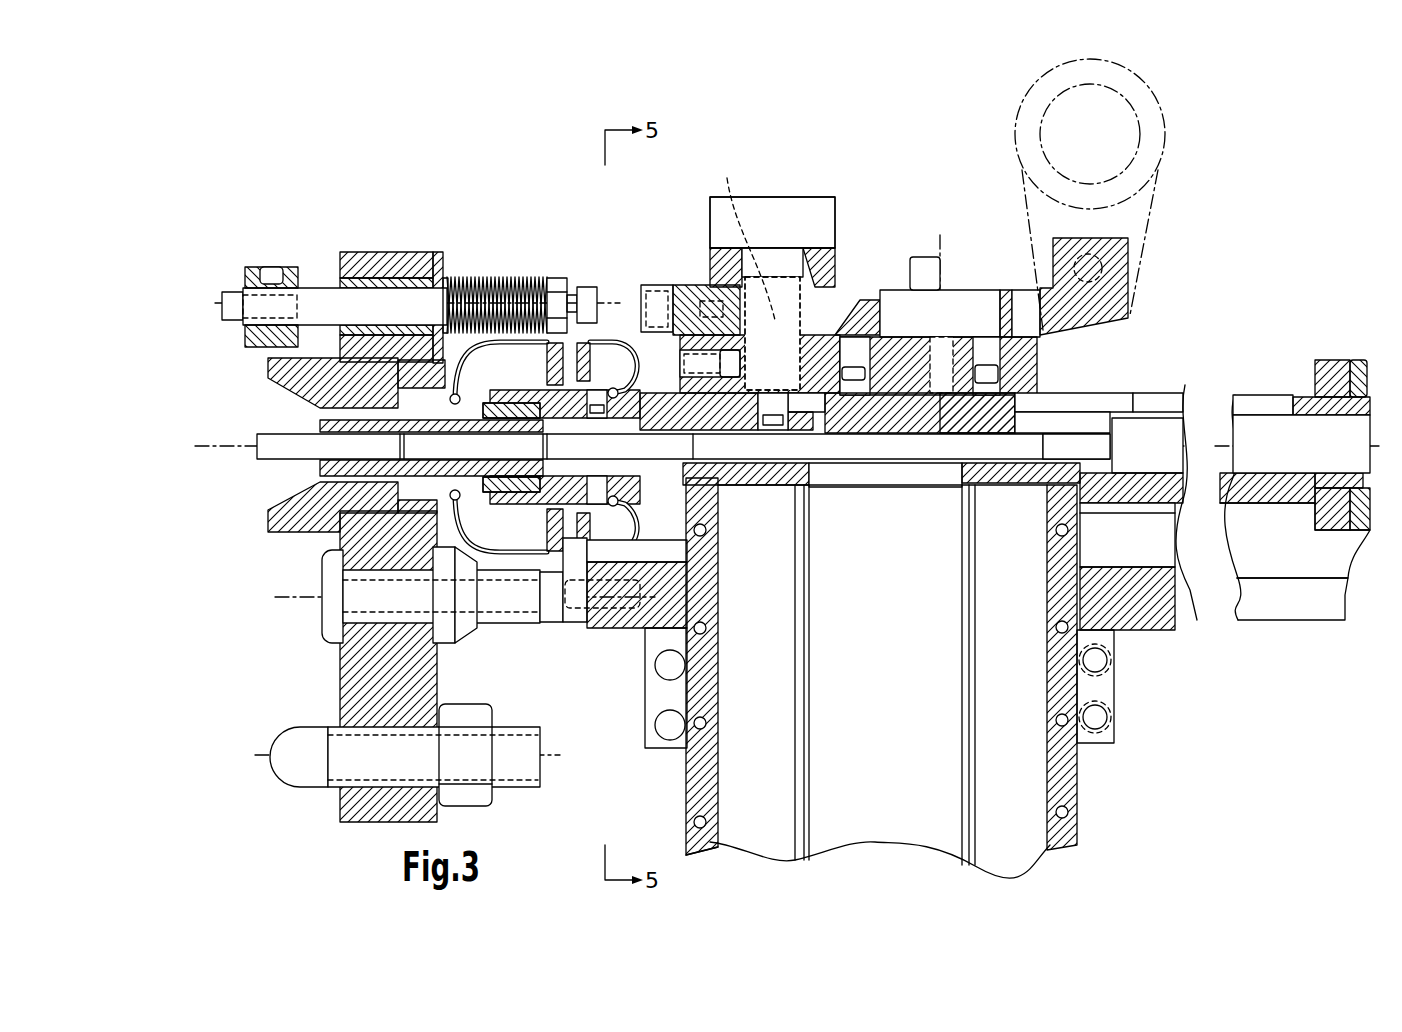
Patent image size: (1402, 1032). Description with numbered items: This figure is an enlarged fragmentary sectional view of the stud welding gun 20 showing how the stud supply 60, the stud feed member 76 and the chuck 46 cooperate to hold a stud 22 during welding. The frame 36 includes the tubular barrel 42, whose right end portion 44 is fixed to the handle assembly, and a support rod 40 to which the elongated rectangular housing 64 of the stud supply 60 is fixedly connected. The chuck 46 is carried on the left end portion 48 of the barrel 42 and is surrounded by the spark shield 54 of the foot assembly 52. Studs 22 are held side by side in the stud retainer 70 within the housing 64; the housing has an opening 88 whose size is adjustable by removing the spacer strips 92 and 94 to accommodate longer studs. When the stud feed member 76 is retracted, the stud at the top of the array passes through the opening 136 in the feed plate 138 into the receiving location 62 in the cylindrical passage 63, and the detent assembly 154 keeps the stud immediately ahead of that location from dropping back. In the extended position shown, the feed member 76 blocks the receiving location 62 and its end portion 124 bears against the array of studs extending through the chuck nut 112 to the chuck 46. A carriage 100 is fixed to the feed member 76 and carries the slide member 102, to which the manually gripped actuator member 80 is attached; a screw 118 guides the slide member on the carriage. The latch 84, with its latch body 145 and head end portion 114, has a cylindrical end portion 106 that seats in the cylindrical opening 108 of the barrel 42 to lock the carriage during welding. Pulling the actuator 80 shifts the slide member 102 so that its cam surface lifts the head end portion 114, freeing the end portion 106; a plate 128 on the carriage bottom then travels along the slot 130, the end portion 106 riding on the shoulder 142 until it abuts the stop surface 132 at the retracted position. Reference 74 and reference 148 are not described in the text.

The stud welding gun 20 is at (1283, 158).
The studs 22 is at (262, 455).
The frame 36 is at (1226, 378).
The support rod 40 is at (1268, 600).
The barrel 42 is at (1217, 387).
The right end portion of barrel 44 is at (1325, 388).
The chuck 46 is at (353, 425).
The left end portion of barrel 48 is at (520, 335).
The foot assembly 52 is at (375, 818).
The spark shield 54 is at (282, 370).
The stud supply 60 is at (686, 773).
The receiving location 62 is at (837, 465).
The cylindrical passage 63 is at (745, 417).
The housing 64 is at (703, 837).
The stud retainer 70 is at (882, 795).
The drum body 74 is at (1272, 460).
The stud feed member 76 is at (1035, 437).
The actuator member 80 is at (1168, 147).
The latch 84 is at (797, 198).
The opening 88 is at (975, 823).
The spacer strip 92 is at (748, 802).
The spacer strip 94 is at (1028, 785).
The carriage 100 is at (303, 461).
The slide member 102 is at (1005, 287).
The cylindrical end portion of latch 106 is at (737, 295).
The cylindrical opening 108 is at (771, 410).
The chuck nut 112 is at (420, 360).
The head end portion of latch 114 is at (812, 200).
The screw 118 is at (948, 255).
The end portion of stud feed member 124 is at (797, 505).
The plate 128 is at (1035, 432).
The slot 130 is at (1165, 405).
The stop surface 132 is at (1178, 395).
The opening 136 is at (953, 513).
The feed plate 138 is at (1035, 487).
The shoulder 142 is at (1147, 445).
The latch body 145 is at (810, 350).
The hole 148 is at (742, 234).
The detent assembly 154 is at (598, 387).